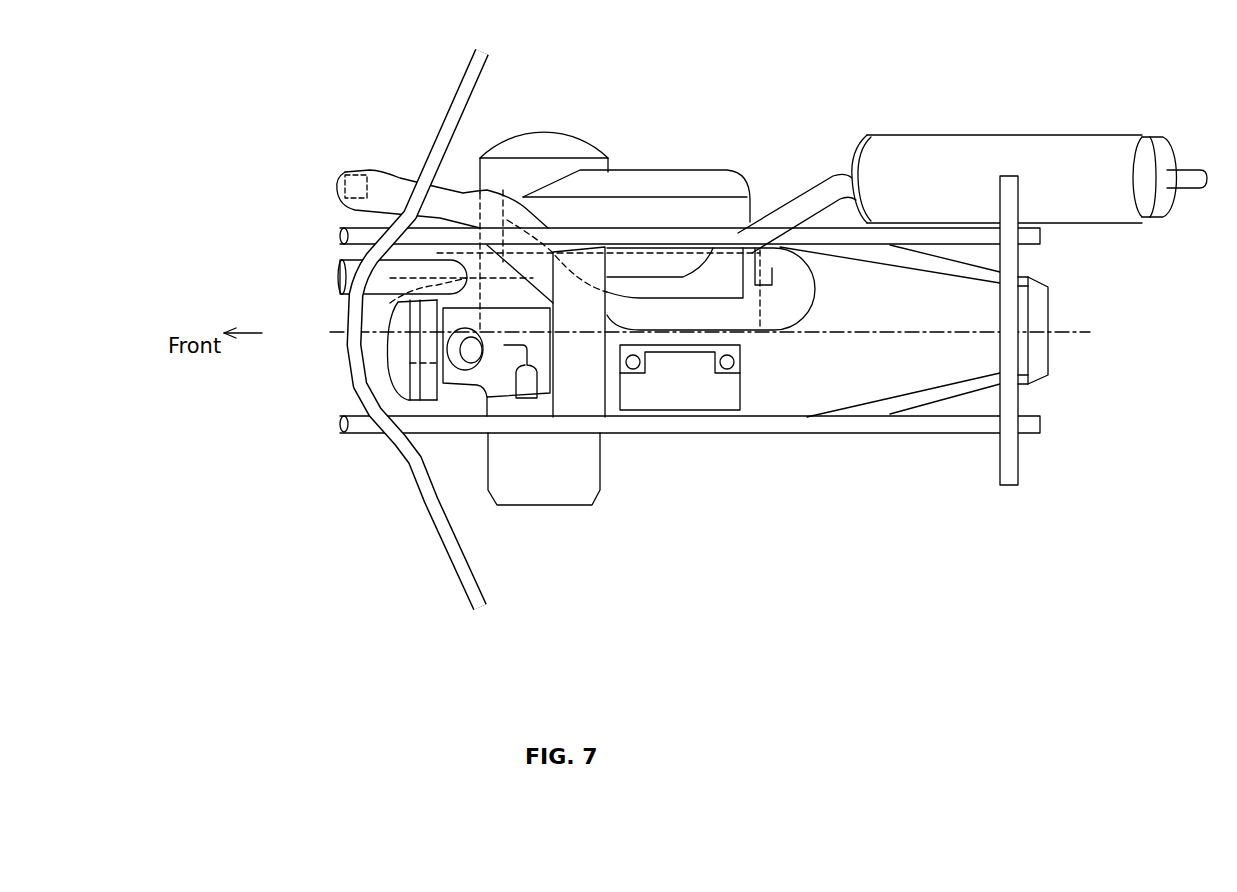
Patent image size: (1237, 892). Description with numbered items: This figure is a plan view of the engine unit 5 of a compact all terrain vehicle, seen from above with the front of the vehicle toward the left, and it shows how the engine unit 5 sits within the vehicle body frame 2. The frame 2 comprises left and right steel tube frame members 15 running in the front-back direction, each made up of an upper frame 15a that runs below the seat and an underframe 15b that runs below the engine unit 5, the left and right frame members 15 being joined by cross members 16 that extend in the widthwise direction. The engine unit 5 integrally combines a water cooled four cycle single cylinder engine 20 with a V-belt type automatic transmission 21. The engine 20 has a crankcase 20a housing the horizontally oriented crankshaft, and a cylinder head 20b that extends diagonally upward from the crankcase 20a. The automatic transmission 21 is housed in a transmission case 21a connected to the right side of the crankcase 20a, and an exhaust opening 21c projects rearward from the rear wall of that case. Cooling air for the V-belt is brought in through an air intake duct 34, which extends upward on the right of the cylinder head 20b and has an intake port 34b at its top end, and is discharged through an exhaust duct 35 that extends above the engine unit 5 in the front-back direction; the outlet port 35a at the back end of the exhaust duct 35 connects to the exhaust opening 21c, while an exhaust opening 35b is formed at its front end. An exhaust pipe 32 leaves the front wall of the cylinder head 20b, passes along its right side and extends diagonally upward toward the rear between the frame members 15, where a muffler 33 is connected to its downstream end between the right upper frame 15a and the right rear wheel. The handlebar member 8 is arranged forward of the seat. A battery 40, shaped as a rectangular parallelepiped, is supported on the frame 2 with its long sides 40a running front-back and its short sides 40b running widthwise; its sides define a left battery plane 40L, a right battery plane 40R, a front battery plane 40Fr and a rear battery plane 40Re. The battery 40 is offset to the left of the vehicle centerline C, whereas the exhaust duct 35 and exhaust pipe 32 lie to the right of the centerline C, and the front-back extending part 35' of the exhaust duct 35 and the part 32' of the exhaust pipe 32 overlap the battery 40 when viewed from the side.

The vehicle body frame 2 is at (828, 447).
The engine unit 5 is at (668, 164).
The handlebar member 8 is at (490, 68).
The frame member 15 is at (943, 221).
The upper frame 15a is at (890, 230).
The underframe 15b is at (965, 262).
The cross member 16 is at (612, 384).
The engine 20 is at (603, 487).
The crankcase 20a is at (488, 485).
The cylinder head 20b is at (455, 392).
The automatic transmission 21 is at (647, 166).
The transmission case 21a is at (703, 167).
The exhaust opening 21c is at (763, 307).
The exhaust pipe 32 is at (797, 183).
The front-back extending part of the exhaust pipe 32' is at (655, 229).
The muffler 33 is at (1098, 133).
The air intake duct 34 is at (438, 210).
The intake port 34b is at (342, 283).
The exhaust duct 35 is at (746, 289).
The front-back extending part of the exhaust duct 35' is at (721, 253).
The outlet port 35a is at (753, 250).
The exhaust opening 35b is at (345, 173).
The battery 40 is at (743, 387).
The long sides 40a is at (687, 413).
The short sides 40b is at (740, 370).
The front battery plane 40Fr is at (620, 375).
The left battery plane 40L is at (720, 410).
The right battery plane 40R is at (693, 345).
The rear battery plane 40Re is at (740, 357).
The centerline C is at (1072, 328).